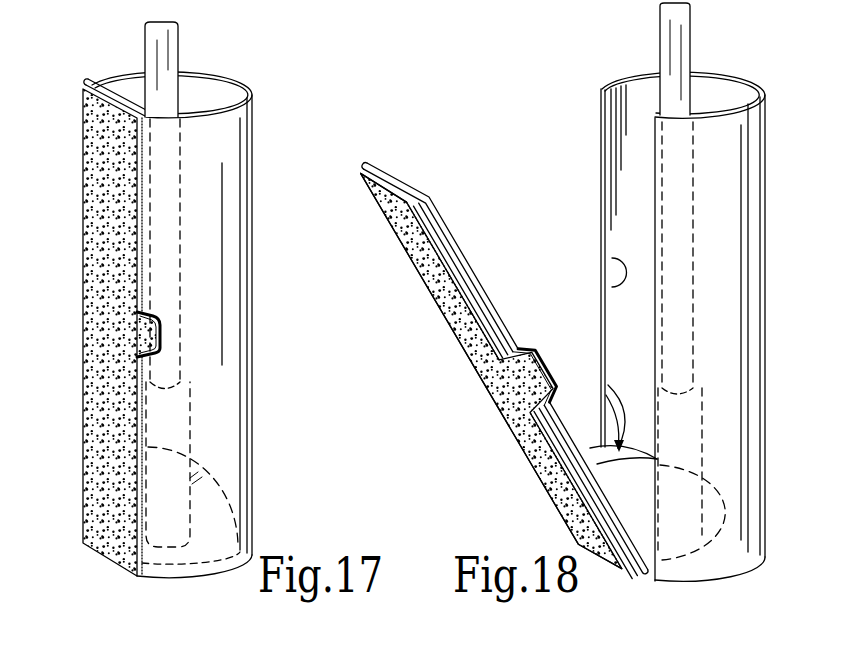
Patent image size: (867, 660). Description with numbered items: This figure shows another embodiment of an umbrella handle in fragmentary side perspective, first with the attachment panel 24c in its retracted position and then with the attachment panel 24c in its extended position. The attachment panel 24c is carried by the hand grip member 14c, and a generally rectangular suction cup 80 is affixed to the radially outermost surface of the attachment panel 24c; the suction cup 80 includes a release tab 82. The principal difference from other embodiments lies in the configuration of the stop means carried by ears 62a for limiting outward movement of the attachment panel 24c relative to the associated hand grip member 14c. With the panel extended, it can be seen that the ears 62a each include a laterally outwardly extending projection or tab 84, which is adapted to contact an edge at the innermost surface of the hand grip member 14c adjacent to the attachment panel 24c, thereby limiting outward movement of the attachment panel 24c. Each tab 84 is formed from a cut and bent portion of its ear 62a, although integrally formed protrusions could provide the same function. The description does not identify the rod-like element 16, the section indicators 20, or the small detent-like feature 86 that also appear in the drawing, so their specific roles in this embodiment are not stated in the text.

In FIG. 17, the hand grip member 14c is at (241, 118).
In FIG. 18, the hand grip member 14c is at (748, 125).
In FIG. 17, the rod 16 is at (178, 52).
In FIG. 18, the rod 16 is at (690, 45).
In FIG. 18, the section line 20 is at (440, 322).
In FIG. 17, the attachment panel 24c is at (127, 82).
In FIG. 18, the attachment panel 24c is at (447, 222).
In FIG. 17, the ears 62a is at (225, 480).
In FIG. 18, the ears 62a is at (620, 478).
In FIG. 17, the suction cup 80 is at (103, 250).
In FIG. 18, the suction cup 80 is at (512, 410).
In FIG. 17, the release tab 82 is at (148, 337).
In FIG. 18, the release tab 82 is at (546, 368).
In FIG. 17, the tab 84 is at (198, 472).
In FIG. 18, the tab 84 is at (620, 446).
In FIG. 18, the detent 86 is at (655, 287).